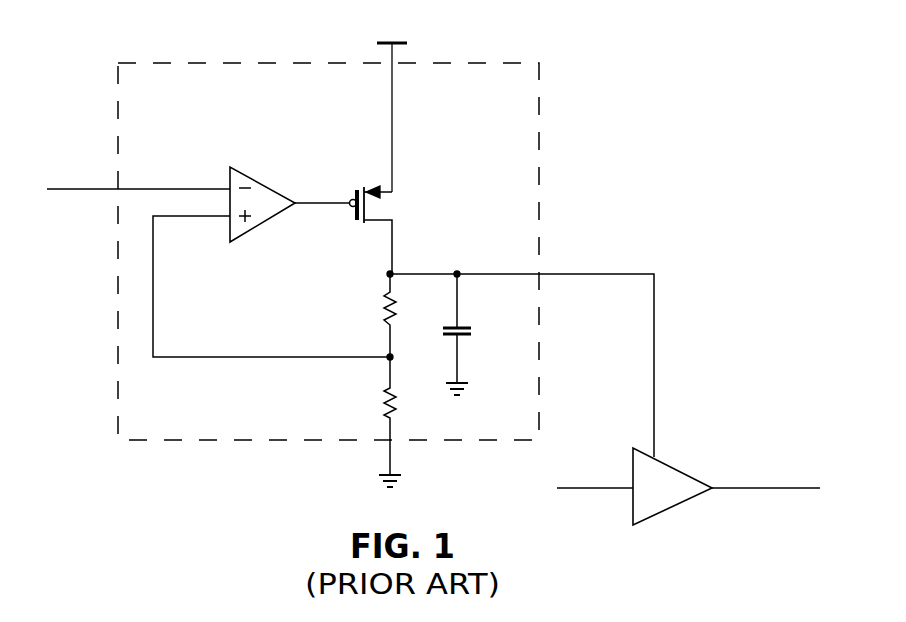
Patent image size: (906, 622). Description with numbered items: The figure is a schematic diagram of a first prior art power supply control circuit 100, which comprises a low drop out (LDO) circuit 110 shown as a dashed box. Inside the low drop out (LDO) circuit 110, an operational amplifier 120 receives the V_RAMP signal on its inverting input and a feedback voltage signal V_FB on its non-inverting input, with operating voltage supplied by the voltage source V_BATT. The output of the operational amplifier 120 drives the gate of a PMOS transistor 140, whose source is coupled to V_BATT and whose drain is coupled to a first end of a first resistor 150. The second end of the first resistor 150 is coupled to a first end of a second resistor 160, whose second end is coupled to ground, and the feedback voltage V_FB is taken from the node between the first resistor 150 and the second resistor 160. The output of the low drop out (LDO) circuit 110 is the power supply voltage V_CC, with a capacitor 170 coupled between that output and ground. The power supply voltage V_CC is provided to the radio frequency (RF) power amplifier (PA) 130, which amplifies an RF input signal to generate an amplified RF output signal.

The power supply control circuit 100 is at (612, 90).
The low drop out (LDO) circuit 110 is at (163, 62).
The operational amplifier 120 is at (263, 183).
The radio frequency (RF) power amplifier (PA) 130 is at (674, 464).
The PMOS transistor 140 is at (352, 216).
The first resistor 150 is at (385, 302).
The second resistor 160 is at (385, 396).
The capacitor 170 is at (467, 324).